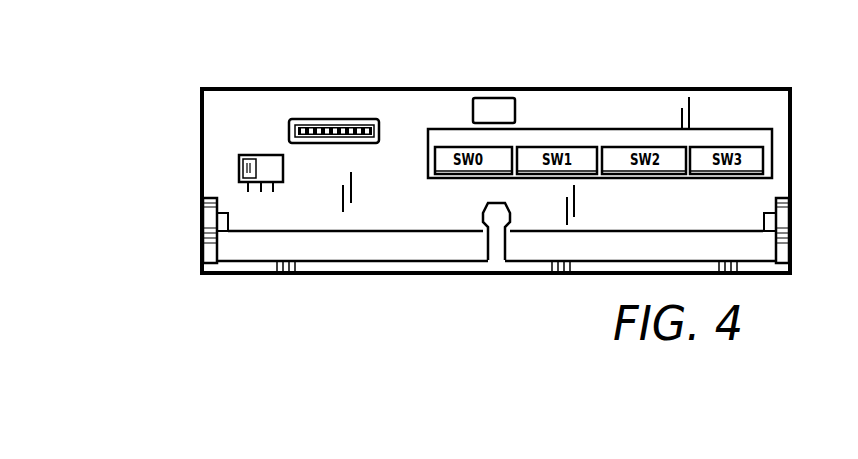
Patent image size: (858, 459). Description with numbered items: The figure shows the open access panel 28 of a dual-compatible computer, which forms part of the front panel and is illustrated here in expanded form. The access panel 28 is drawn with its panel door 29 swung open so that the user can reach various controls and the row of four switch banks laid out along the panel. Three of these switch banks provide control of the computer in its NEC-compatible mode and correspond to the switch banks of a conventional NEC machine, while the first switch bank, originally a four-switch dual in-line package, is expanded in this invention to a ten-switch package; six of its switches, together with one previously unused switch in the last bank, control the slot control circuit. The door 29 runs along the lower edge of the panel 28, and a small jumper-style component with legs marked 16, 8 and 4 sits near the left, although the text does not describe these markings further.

The access panel 28 is at (773, 113).
The panel door 29 is at (783, 258).
The jumper component 8 is at (261, 192).
The jumper pin 16 is at (248, 192).
The jumper pin 4 is at (273, 192).